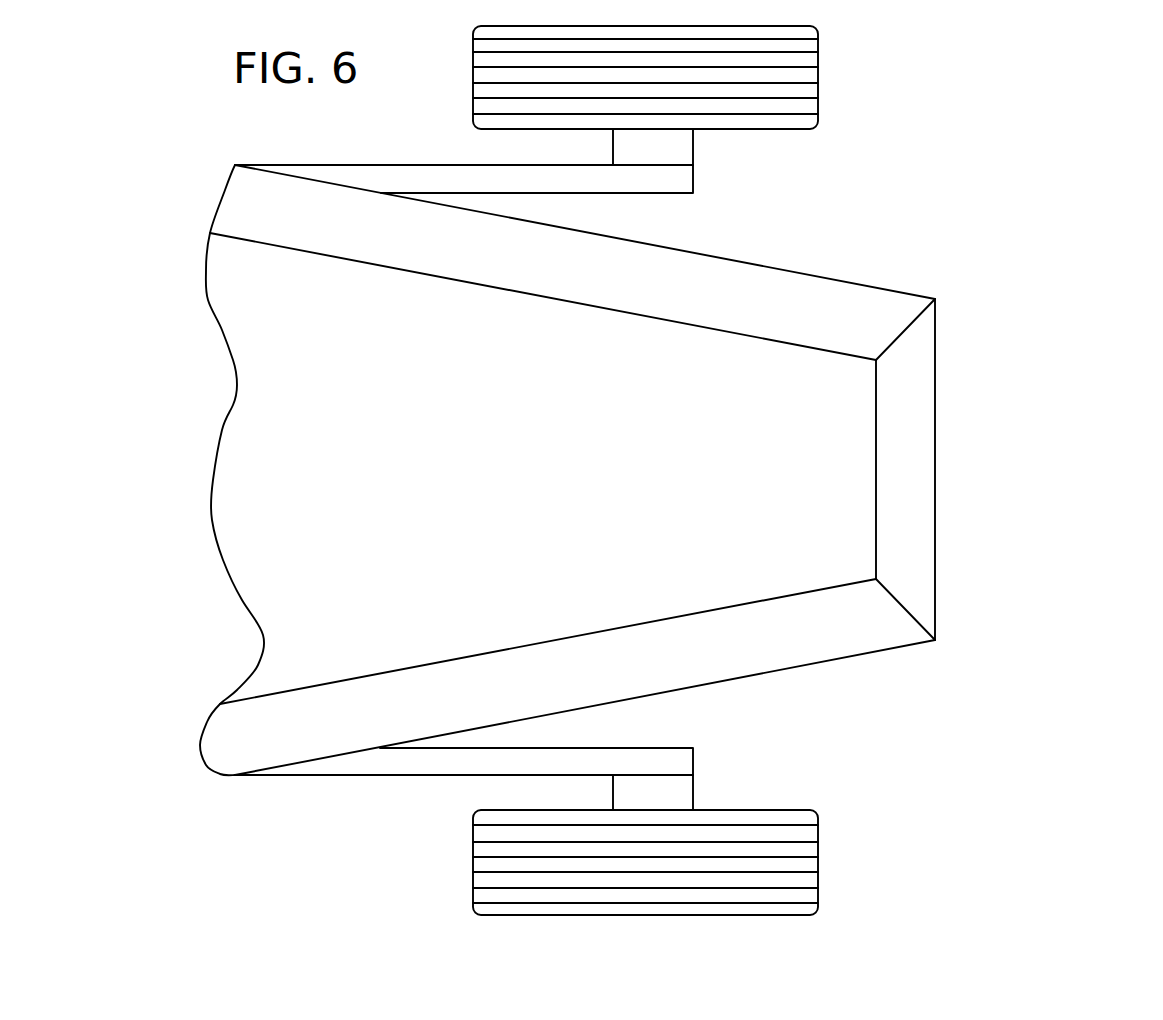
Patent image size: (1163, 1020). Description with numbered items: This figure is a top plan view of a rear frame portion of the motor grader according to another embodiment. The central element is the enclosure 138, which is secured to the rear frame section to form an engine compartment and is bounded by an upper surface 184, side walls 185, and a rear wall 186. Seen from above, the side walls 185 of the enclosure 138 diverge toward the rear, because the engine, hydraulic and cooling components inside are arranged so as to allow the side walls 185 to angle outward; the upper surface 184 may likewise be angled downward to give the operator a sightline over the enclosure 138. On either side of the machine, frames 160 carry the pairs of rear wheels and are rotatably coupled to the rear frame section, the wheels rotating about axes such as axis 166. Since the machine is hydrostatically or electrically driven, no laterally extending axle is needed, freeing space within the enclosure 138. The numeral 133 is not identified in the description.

The roller assembly 133 is at (838, 865).
The enclosure 138 is at (772, 563).
The frames 160 is at (440, 758).
The axis 166 is at (738, 68).
The upper surface 184 is at (755, 433).
The side walls 185 is at (795, 308).
The rear wall 186 is at (902, 502).